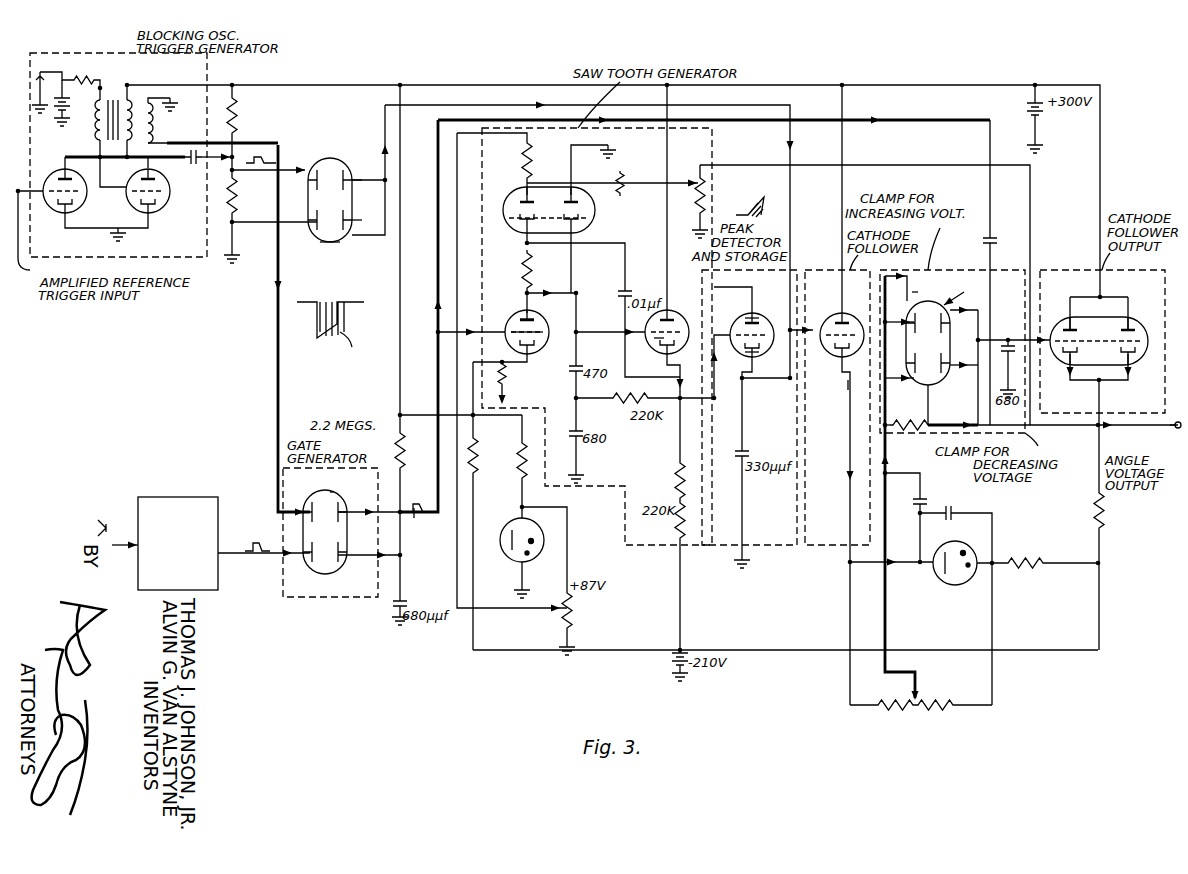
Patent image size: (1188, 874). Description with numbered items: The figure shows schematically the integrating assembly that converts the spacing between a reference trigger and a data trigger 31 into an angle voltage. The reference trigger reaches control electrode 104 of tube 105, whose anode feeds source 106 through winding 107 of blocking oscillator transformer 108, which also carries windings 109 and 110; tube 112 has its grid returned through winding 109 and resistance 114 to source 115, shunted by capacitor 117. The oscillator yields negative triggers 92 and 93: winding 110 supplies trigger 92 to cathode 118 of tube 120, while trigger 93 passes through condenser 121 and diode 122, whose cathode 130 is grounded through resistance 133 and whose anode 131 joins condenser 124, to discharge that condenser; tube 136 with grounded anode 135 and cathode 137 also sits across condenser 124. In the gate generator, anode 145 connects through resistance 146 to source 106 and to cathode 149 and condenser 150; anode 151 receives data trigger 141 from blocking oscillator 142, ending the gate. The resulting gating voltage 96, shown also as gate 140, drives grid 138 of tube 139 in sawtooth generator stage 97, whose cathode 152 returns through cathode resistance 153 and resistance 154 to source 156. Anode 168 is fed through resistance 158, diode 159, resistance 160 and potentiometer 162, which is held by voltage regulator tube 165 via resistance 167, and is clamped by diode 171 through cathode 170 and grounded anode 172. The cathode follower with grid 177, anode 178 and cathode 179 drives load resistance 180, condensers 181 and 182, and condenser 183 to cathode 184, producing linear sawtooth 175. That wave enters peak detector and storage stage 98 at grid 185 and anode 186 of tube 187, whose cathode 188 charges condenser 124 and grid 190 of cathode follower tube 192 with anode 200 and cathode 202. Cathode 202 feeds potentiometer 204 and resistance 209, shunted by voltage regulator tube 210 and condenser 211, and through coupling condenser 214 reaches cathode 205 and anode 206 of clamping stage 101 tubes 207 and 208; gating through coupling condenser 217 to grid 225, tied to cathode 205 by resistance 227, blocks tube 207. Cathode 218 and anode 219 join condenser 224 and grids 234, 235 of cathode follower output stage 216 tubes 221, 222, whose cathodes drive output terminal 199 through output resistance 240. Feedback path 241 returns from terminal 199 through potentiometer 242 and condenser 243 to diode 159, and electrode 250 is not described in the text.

The data trigger 31 is at (110, 515).
The negative reference trigger 92 is at (258, 130).
The negative reference trigger 93 is at (76, 56).
The negative gating voltage 96 is at (430, 520).
The sawtooth generator stage 97 is at (510, 316).
The peak detector and storage stage 98 is at (780, 307).
The clamping stage 101 is at (952, 270).
The control electrode 104 is at (78, 202).
The tube 105 is at (54, 214).
The voltage source 106 is at (1026, 113).
The winding 107 is at (124, 94).
The blocking oscillator transformer 108 is at (146, 78).
The winding 109 is at (96, 126).
The winding 110 is at (156, 128).
The tube 112 is at (162, 198).
The resistance 114 is at (82, 78).
The voltage source 115 is at (80, 103).
The capacitor 117 is at (50, 81).
The cathode 118 is at (330, 532).
The tube 120 is at (336, 493).
The condenser 121 is at (192, 166).
The diode 122 is at (340, 164).
The condenser 124 is at (748, 448).
The cathode 130 is at (320, 164).
The anode 131 is at (353, 184).
The resistance 133 is at (240, 204).
The anode 135 is at (310, 232).
The tube 136 is at (342, 248).
The cathode 137 is at (354, 219).
The control grid 138 is at (530, 337).
The tube 139 is at (529, 352).
The variable width gate 140 is at (342, 332).
The data trigger 141 is at (254, 540).
The blocking oscillator stage 142 is at (195, 497).
The anode 145 is at (384, 499).
The resistance 146 is at (318, 432).
The cathode 149 is at (342, 554).
The condenser 150 is at (406, 597).
The anode 151 is at (308, 570).
The cathode 152 is at (508, 376).
The cathode resistance 153 is at (526, 401).
The resistance 154 is at (518, 478).
The bias voltage source 156 is at (674, 673).
The resistance 158 is at (532, 272).
The diode 159 is at (520, 200).
The resistance 160 is at (531, 162).
The potentiometer resistance 162 is at (574, 614).
The voltage regulator tube 165 is at (504, 540).
The resistance 167 is at (494, 444).
The anode 168 is at (534, 316).
The cathode 170 is at (560, 239).
The diode 171 is at (598, 214).
The anode 172 is at (576, 192).
The sawtooth wave 175 is at (638, 322).
The control grid 177 is at (654, 346).
The anode 178 is at (674, 219).
The cathode 179 is at (667, 356).
The load resistance 180 is at (630, 400).
The condenser 181 is at (586, 370).
The condenser 182 is at (580, 434).
The condenser 183 is at (630, 294).
The cathode 184 is at (524, 244).
The control grid 185 is at (740, 322).
The anode 186 is at (756, 308).
The tube 187 is at (745, 354).
The cathode 188 is at (756, 354).
The control grid 190 is at (832, 318).
The cathode follower tube 192 is at (840, 354).
The angle voltage output terminal 199 is at (1172, 428).
The anode 200 is at (860, 199).
The cathode 202 is at (847, 382).
The potentiometer resistance 204 is at (940, 706).
The cathode 205 is at (925, 392).
The anode 206 is at (905, 308).
The tube 207 is at (950, 384).
The tube 208 is at (944, 300).
The resistance 209 is at (1030, 562).
The voltage regulator tube 210 is at (958, 585).
The condenser 211 is at (960, 508).
The coupling condenser 214 is at (928, 500).
The cathode follower output stage 216 is at (1058, 270).
The coupling condenser 217 is at (996, 234).
The cathode 218 is at (984, 314).
The anode 219 is at (944, 374).
The cathode follower tube 221 is at (1066, 320).
The cathode follower tube 222 is at (1134, 320).
The condenser 224 is at (1012, 352).
The control grid 225 is at (1054, 370).
The resistance 227 is at (908, 436).
The control grid 234 is at (1078, 384).
The control grid 235 is at (1120, 384).
The output resistance 240 is at (1106, 507).
The feedback path 241 is at (1022, 166).
The potentiometer resistance 242 is at (700, 172).
The condenser 243 is at (622, 173).
The electrode of clamp tube 250 is at (920, 290).